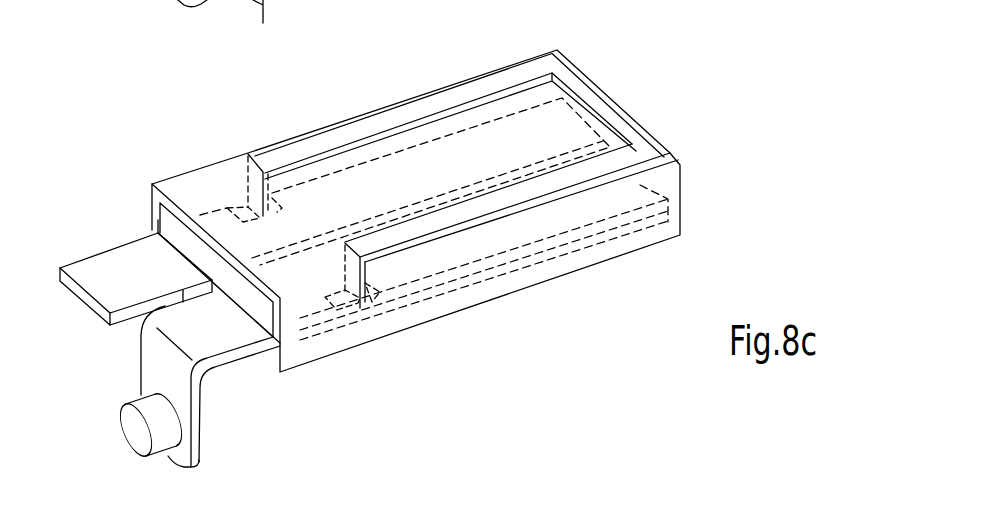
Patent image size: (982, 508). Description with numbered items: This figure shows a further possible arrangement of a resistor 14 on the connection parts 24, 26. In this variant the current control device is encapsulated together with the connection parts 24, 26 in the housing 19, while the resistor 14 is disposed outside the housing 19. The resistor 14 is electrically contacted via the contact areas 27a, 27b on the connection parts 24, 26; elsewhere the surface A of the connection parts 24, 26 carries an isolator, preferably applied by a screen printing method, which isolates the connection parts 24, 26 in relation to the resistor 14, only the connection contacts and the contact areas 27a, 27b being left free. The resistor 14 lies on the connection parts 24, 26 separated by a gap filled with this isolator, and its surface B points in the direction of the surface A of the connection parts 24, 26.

The resistor 14 is at (577, 80).
The housing 19 is at (192, 192).
The connection part 24 is at (89, 267).
The connection part 26 is at (527, 262).
The contact area 27a is at (248, 205).
The contact area 27b is at (362, 306).
The surface of the connection parts A is at (131, 272).
The surface of the resistor B is at (440, 241).